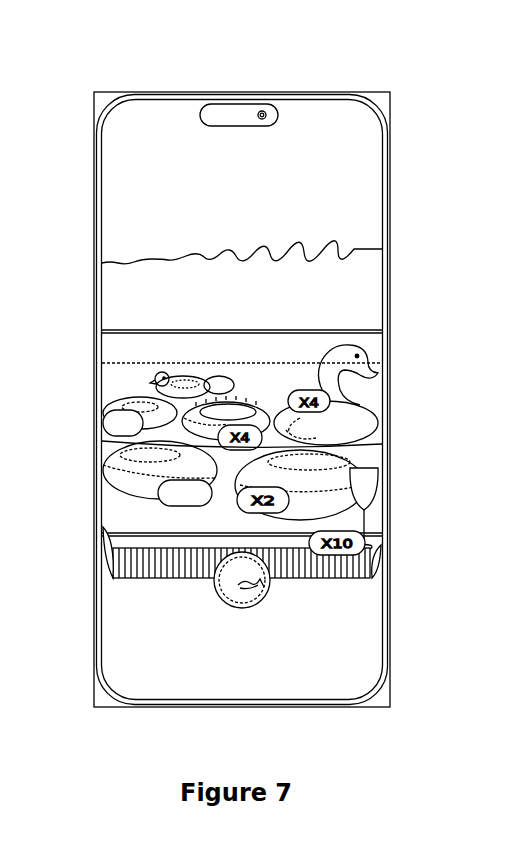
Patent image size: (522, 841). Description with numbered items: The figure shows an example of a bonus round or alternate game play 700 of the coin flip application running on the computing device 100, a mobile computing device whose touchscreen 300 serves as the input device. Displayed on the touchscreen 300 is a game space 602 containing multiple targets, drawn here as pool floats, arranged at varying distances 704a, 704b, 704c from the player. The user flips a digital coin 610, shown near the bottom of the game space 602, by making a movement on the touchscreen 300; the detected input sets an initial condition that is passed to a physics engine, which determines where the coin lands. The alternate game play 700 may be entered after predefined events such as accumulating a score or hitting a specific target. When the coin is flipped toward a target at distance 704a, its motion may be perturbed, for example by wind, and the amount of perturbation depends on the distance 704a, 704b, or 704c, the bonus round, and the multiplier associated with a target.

The alternate game play 700 is at (224, 62).
The computing device 100 is at (362, 102).
The touchscreen 300 is at (125, 213).
The game space 602 is at (256, 229).
The target distance 704a is at (158, 393).
The target distance 704b is at (107, 414).
The target distance 704c is at (104, 460).
The digital coin 610 is at (218, 590).